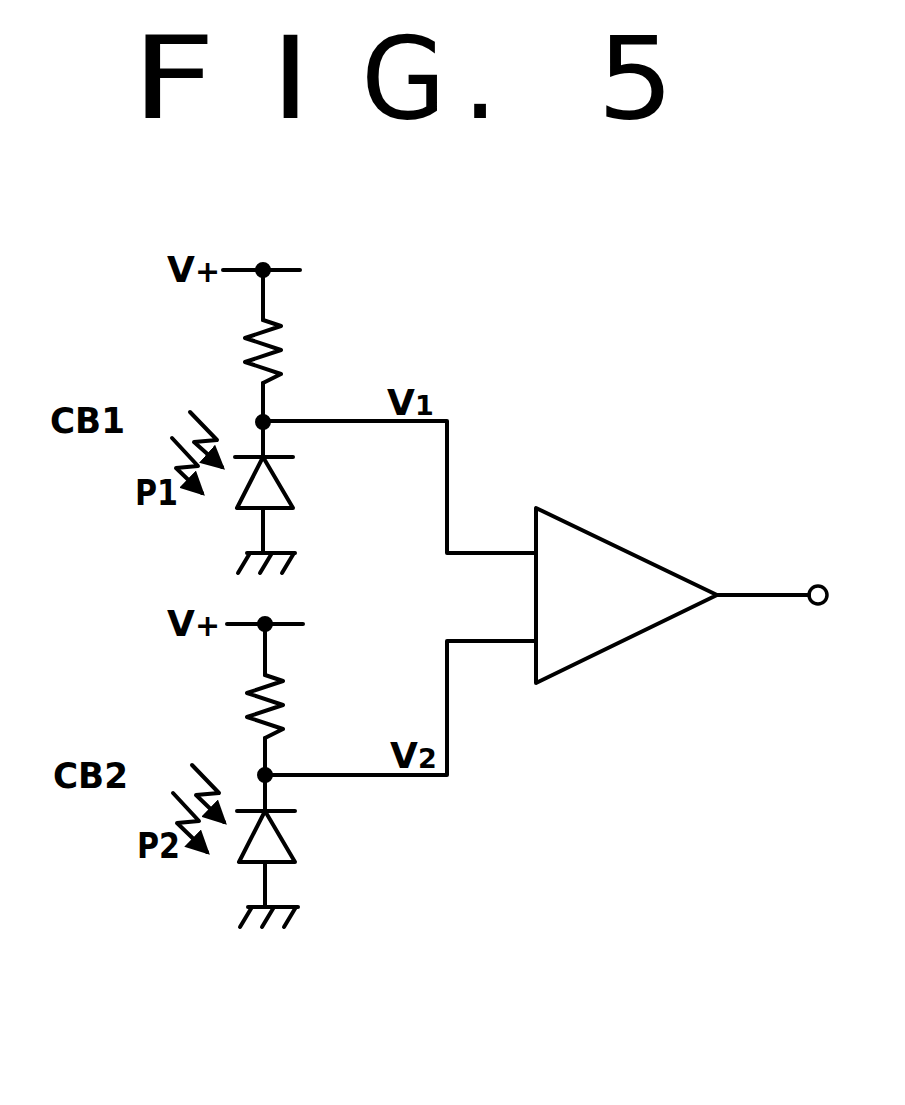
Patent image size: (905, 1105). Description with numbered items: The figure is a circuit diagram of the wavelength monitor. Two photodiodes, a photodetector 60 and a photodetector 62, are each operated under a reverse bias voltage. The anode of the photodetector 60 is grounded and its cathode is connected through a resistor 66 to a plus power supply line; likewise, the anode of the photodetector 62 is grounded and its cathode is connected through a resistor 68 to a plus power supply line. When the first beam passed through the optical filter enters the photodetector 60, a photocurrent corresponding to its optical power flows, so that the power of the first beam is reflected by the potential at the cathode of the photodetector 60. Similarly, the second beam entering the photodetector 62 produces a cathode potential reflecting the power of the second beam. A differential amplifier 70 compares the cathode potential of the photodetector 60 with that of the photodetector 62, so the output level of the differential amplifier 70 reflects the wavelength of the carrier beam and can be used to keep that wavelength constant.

The photodetector 60 is at (258, 482).
The photodetector 62 is at (260, 836).
The resistor 66 is at (294, 351).
The resistor 68 is at (296, 706).
The differential amplifier 70 is at (657, 562).